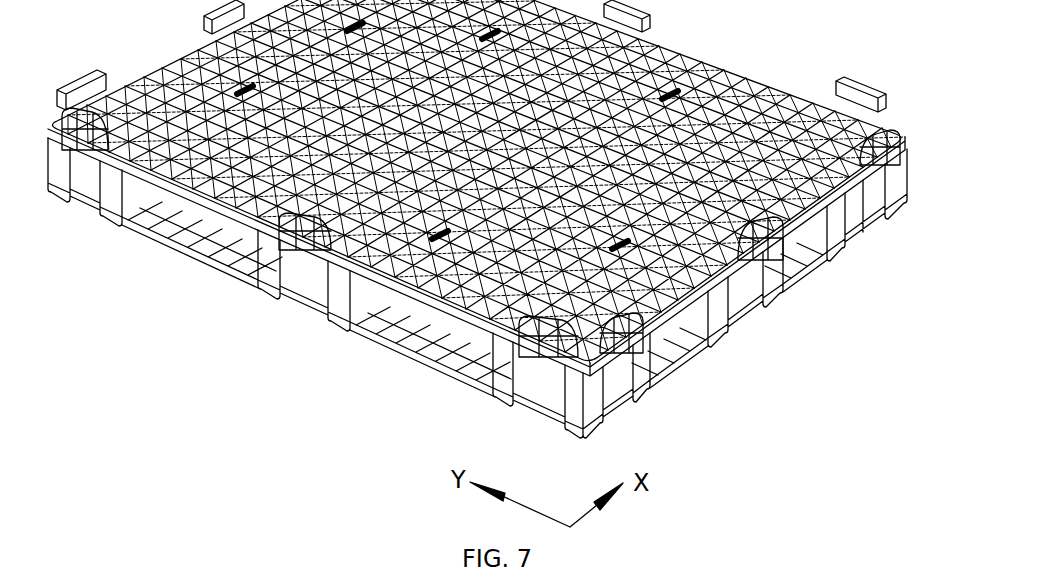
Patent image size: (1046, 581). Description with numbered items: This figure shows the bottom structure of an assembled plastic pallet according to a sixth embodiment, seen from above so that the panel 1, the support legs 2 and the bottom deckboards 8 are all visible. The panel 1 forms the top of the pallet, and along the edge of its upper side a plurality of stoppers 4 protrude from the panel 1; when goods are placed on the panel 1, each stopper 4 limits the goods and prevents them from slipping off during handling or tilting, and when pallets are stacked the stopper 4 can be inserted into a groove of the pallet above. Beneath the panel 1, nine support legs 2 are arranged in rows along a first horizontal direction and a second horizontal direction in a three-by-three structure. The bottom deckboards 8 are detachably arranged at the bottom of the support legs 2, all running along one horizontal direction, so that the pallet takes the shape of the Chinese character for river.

The panel 1 is at (703, 60).
The support leg 2 is at (757, 280).
The stopper 4 is at (864, 98).
The bottom deckboard 8 is at (372, 349).